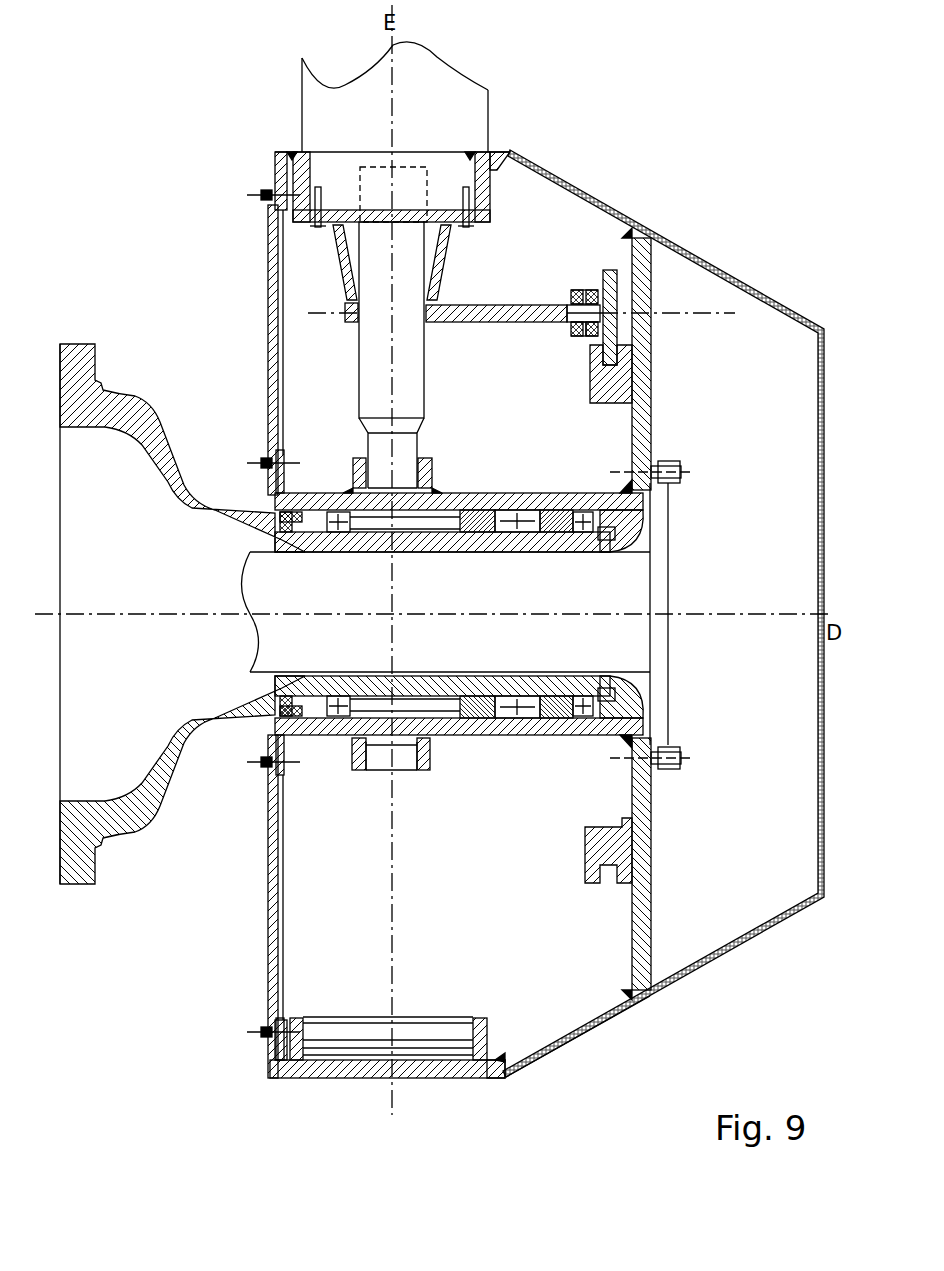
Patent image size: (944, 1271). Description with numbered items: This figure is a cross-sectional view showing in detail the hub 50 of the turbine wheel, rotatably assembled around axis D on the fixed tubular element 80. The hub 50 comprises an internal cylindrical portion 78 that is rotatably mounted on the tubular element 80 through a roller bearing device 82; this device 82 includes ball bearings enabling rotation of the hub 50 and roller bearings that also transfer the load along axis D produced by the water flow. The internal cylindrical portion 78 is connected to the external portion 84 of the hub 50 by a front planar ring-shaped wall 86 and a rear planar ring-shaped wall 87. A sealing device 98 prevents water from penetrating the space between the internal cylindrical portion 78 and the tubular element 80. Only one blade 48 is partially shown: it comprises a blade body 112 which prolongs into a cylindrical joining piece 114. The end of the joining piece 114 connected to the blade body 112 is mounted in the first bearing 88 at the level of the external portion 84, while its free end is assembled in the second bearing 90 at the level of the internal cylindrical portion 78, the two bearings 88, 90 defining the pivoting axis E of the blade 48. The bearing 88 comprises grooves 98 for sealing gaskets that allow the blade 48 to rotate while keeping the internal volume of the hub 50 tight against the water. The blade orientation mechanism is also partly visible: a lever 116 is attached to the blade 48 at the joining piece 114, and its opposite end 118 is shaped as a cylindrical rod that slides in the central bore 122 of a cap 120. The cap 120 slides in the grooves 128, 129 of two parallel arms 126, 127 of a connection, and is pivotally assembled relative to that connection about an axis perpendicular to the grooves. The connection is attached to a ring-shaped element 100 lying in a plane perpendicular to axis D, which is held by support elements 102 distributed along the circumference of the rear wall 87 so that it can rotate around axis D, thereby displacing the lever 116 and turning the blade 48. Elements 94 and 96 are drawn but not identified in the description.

The blade 48 is at (407, 108).
The hub 50 is at (586, 1032).
The internal cylindrical portion 78 is at (527, 493).
The fixed tubular element 80 is at (163, 770).
The roller bearing device 82 is at (632, 703).
The external portion 84 is at (795, 915).
The front planar ring-shaped wall 86 is at (265, 848).
The rear planar ring-shaped wall 87 is at (650, 910).
The first bearing 88 is at (290, 180).
The second bearing 90 is at (418, 462).
The shaft 94 is at (583, 630).
The bolt 96 is at (675, 460).
The grooves / sealing device 98 is at (255, 722).
The ring-shaped element 100 is at (645, 333).
The support element 102 is at (613, 385).
The blade body 112 is at (457, 88).
The cylindrical joining piece 114 is at (383, 393).
The lever 116 is at (478, 315).
The rod-shaped end 118 is at (587, 310).
The cap 120 is at (575, 324).
The central bore 122 is at (580, 330).
The first parallel arm 126 is at (576, 292).
The second parallel arm 127 is at (584, 336).
The groove 128 is at (590, 292).
The groove 129 is at (588, 340).